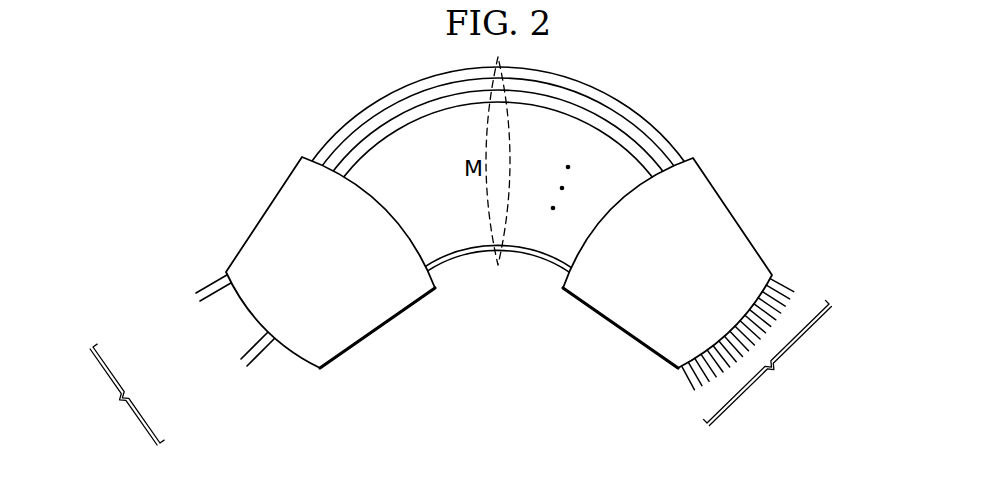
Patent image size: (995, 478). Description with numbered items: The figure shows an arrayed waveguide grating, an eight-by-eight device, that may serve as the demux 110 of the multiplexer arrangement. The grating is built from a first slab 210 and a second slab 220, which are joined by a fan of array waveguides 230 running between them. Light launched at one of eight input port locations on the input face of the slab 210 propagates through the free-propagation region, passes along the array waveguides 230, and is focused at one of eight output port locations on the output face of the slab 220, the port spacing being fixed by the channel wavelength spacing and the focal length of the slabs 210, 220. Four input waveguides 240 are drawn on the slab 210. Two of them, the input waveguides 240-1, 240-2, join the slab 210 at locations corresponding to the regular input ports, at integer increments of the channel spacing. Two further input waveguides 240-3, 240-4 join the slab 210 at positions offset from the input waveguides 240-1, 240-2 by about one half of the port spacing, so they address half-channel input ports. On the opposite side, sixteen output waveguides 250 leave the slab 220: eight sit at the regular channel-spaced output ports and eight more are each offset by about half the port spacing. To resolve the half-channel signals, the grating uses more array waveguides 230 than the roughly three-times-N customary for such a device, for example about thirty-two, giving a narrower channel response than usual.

The demux 110 is at (222, 117).
The first slab 210 is at (347, 283).
The second slab 220 is at (697, 284).
The array waveguides 230 is at (498, 267).
The input waveguides 240 is at (196, 341).
The input waveguide 240-1 is at (202, 289).
The input waveguide 240-2 is at (242, 340).
The input waveguide 240-3 is at (215, 303).
The input waveguide 240-4 is at (261, 354).
The output waveguides 250 is at (757, 352).